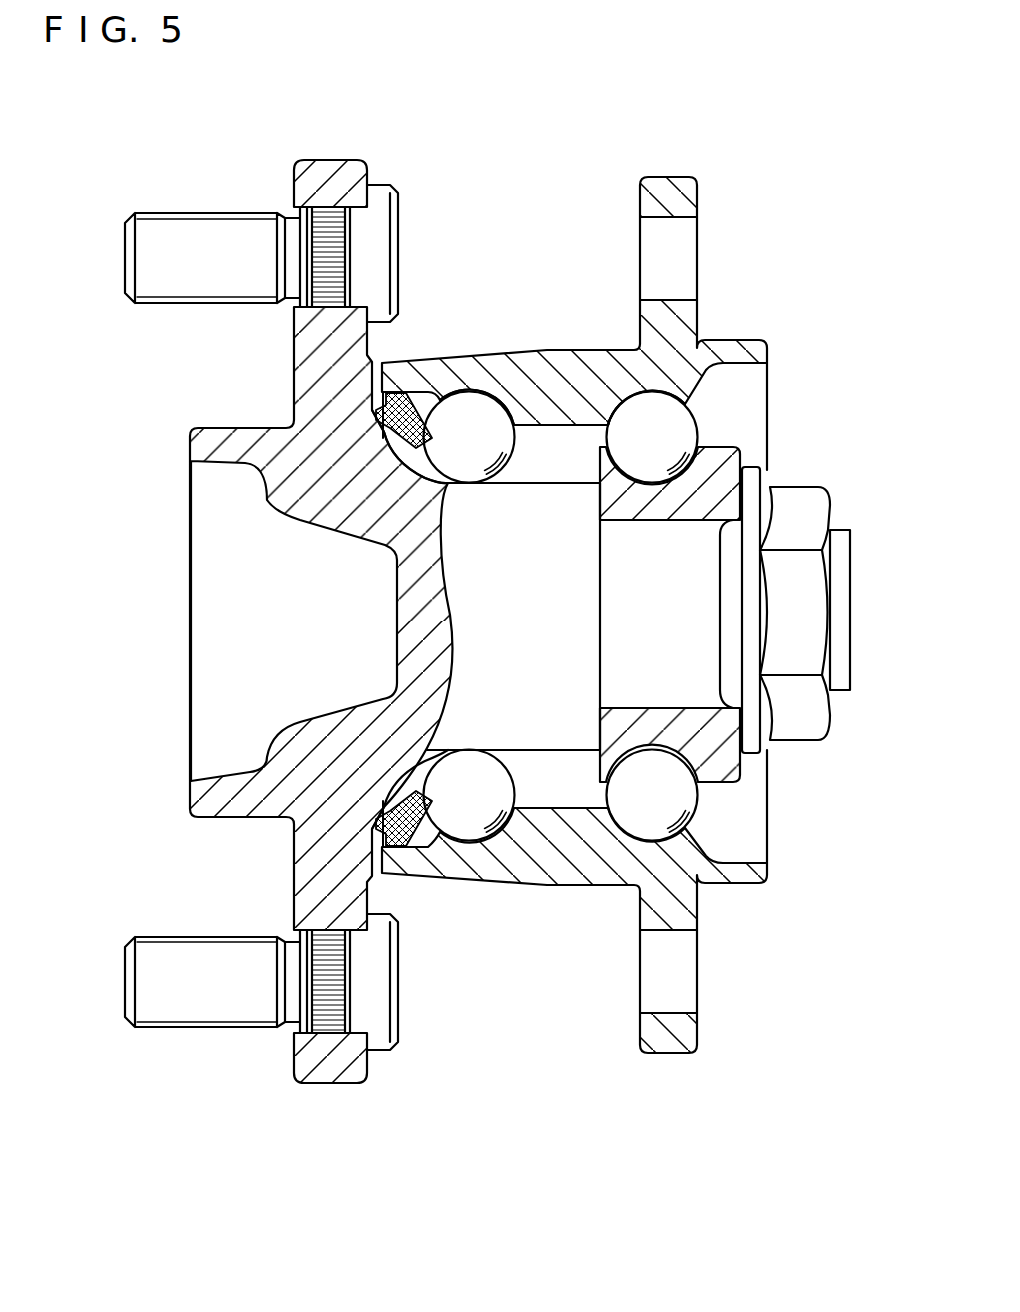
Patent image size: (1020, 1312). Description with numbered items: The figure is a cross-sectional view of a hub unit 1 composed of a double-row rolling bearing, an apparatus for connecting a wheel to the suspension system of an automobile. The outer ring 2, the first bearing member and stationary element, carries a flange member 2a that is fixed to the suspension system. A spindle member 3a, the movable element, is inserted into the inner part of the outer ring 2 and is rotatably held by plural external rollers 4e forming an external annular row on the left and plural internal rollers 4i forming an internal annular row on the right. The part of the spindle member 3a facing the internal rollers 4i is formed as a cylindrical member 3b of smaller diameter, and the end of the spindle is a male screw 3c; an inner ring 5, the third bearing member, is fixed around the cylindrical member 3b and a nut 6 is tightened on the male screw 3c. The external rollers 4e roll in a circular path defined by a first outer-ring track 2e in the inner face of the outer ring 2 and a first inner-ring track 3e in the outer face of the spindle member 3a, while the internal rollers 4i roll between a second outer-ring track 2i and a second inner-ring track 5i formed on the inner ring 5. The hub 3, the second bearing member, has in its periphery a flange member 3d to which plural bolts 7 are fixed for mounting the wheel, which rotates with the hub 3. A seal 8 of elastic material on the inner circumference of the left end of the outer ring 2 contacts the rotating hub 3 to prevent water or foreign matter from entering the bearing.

The hub unit 1 is at (536, 189).
The outer ring 2 is at (516, 363).
The flange member 2a is at (697, 1045).
The first outer-ring track 2e is at (480, 400).
The second outer-ring track 2i is at (683, 393).
The hub 3 is at (252, 800).
The spindle member 3a is at (492, 572).
The cylindrical member 3b is at (690, 632).
The male screw 3c is at (841, 565).
The flange member 3d is at (355, 168).
The first inner-ring track 3e is at (450, 440).
The external rollers 4e is at (503, 417).
The internal rollers 4i is at (680, 417).
The inner ring 5 is at (760, 750).
The second inner-ring track 5i is at (700, 437).
The nut 6 is at (818, 718).
The bolts 7 is at (231, 225).
The seal 8 is at (433, 850).